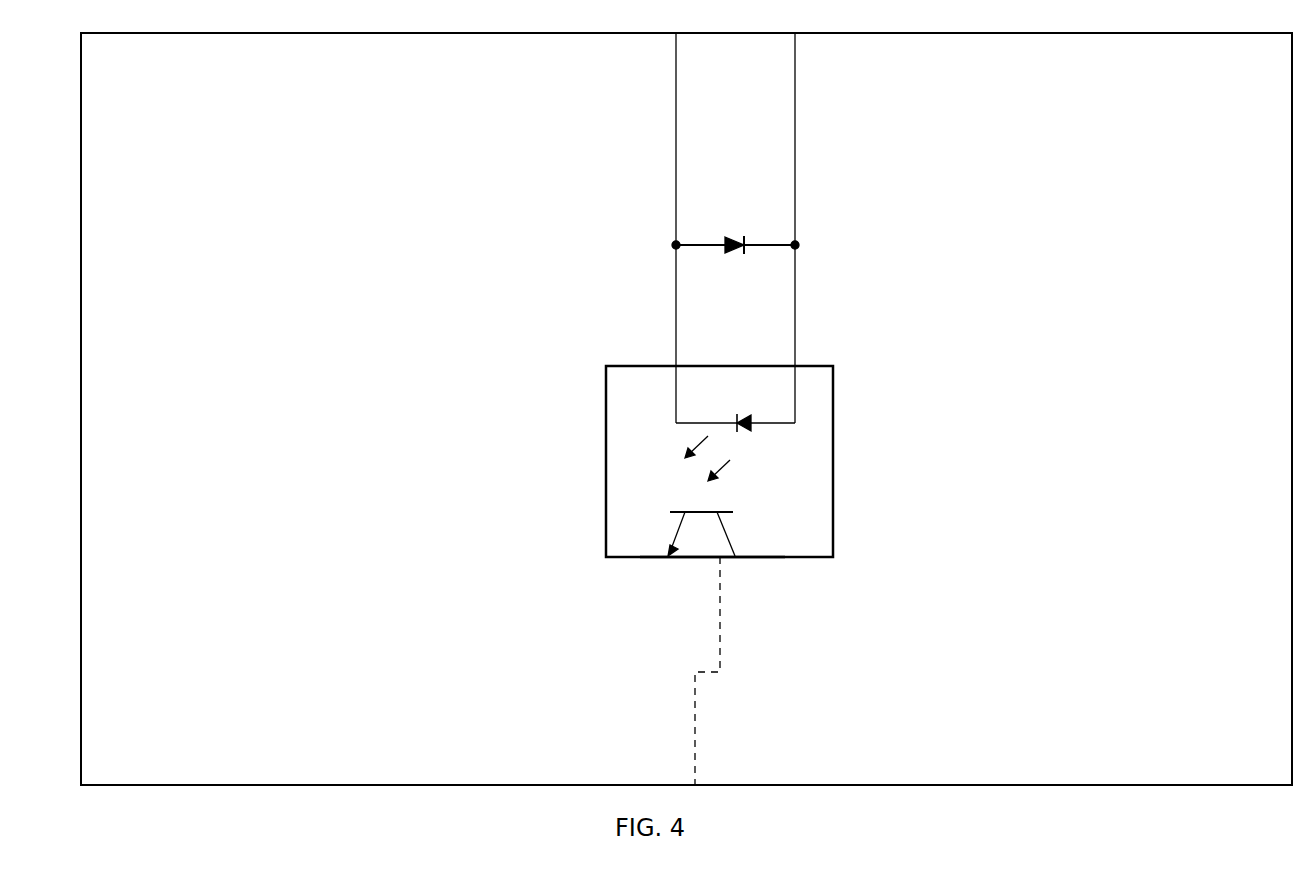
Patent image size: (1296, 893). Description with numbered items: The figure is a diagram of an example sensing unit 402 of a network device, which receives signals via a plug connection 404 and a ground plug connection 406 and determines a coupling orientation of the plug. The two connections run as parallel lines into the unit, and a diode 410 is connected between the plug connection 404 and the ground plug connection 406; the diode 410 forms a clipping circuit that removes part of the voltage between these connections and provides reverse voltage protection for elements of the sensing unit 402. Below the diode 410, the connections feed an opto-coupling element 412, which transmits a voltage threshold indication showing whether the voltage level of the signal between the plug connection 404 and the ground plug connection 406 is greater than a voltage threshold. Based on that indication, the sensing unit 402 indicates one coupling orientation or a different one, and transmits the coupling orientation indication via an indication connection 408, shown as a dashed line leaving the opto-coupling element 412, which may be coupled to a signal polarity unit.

The sensing unit 402 is at (217, 100).
The plug connection 404 is at (795, 163).
The ground plug connection 406 is at (676, 163).
The indication connection 408 is at (695, 695).
The diode 410 is at (733, 228).
The opto-coupling element 412 is at (606, 460).